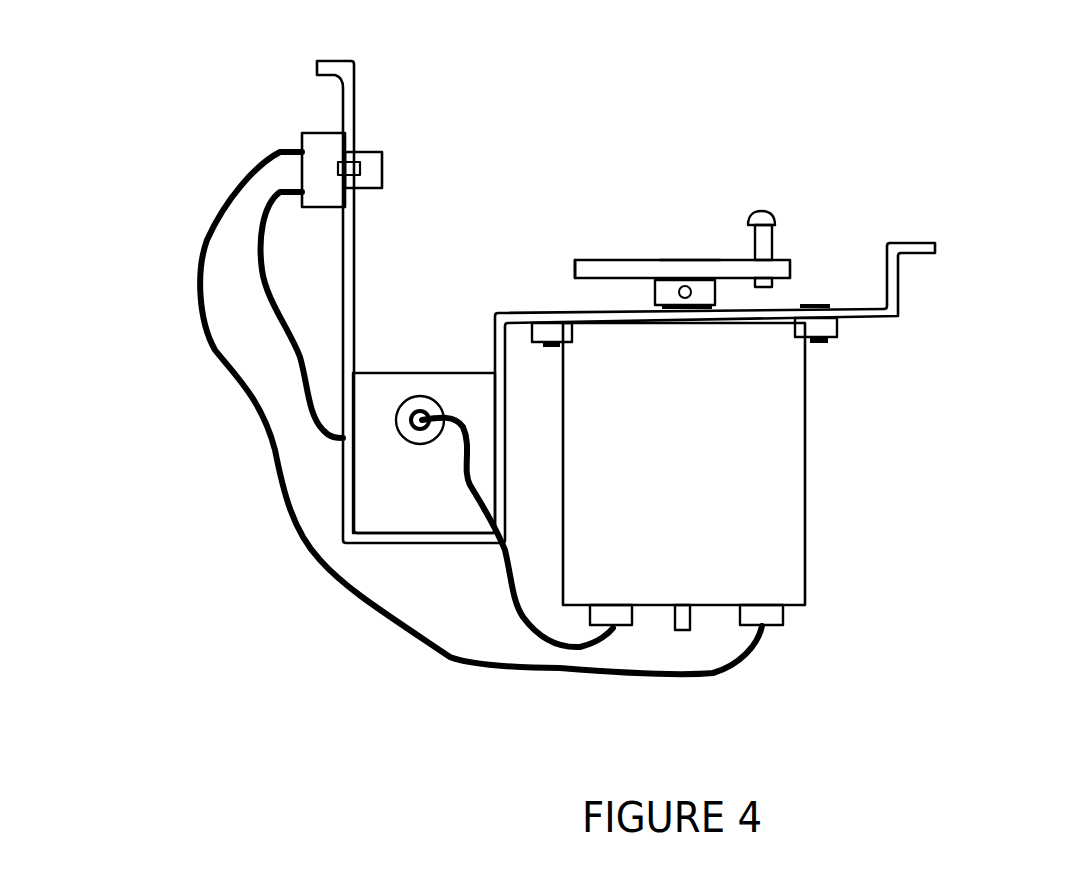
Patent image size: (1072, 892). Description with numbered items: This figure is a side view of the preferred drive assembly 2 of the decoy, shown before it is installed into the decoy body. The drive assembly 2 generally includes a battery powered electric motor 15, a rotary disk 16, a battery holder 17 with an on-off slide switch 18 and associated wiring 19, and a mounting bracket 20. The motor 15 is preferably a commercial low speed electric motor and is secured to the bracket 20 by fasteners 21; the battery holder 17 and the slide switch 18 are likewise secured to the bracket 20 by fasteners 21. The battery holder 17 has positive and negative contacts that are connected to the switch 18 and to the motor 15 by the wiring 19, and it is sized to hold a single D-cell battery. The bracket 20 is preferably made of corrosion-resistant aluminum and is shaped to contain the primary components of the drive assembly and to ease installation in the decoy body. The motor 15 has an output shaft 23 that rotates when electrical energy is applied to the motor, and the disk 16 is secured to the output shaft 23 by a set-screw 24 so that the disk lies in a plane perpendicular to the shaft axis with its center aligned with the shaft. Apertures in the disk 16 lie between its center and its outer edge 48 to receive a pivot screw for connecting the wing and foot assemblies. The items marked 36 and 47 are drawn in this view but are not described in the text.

The drive assembly 2 is at (549, 303).
The electric motor 15 is at (750, 547).
The rotary disk 16 is at (647, 272).
The battery holder 17 is at (372, 480).
The on-off slide switch 18 is at (315, 142).
The wiring 19 is at (263, 277).
The mounting bracket 20 is at (354, 65).
The fasteners 21 is at (540, 298).
The output shaft 23 is at (817, 302).
The set-screw 24 is at (679, 293).
The screw 36 is at (760, 212).
The plate surface 47 is at (687, 260).
The outer edge 48 is at (568, 262).